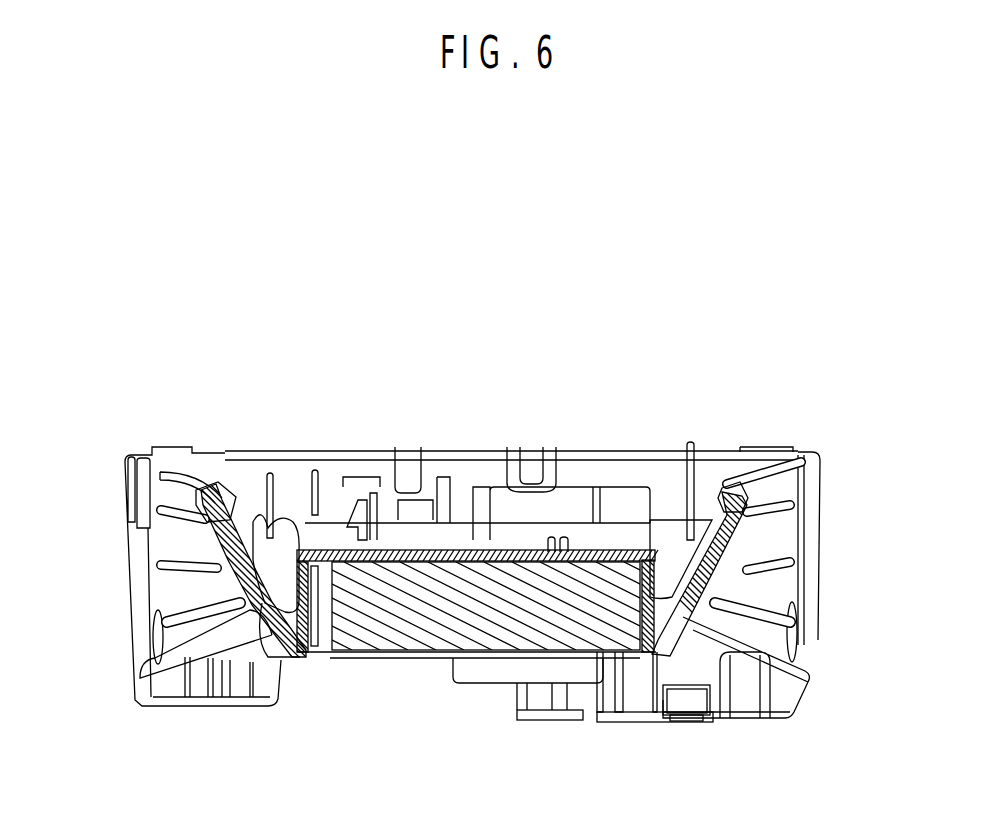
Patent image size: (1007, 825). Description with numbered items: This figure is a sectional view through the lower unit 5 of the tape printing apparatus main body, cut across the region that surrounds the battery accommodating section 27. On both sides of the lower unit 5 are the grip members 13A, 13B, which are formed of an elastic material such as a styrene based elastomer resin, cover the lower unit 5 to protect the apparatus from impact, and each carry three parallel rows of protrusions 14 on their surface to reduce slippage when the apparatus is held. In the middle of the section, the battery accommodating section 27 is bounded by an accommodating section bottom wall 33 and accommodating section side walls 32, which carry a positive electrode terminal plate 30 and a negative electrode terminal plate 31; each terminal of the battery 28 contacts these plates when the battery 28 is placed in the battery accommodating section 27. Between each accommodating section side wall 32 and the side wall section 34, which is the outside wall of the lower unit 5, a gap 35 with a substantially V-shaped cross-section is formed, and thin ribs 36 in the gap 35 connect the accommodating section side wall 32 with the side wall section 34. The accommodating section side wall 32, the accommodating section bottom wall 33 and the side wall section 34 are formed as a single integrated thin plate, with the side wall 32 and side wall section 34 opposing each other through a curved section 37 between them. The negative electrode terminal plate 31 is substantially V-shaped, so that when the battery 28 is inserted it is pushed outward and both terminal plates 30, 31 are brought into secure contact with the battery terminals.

The lower unit 5 is at (780, 412).
The grip member 13A is at (805, 640).
The grip member 13B is at (176, 641).
The protrusions 14 is at (170, 620).
The battery accommodating section 27 is at (568, 548).
The battery 28 is at (425, 625).
The positive electrode terminal plate 30 is at (648, 598).
The negative electrode terminal plate 31 is at (310, 645).
The accommodating section side wall 32 is at (304, 545).
The accommodating section bottom wall 33 is at (460, 548).
The side wall section 34 is at (243, 518).
The gap 35 is at (267, 558).
The thin ribs 36 is at (288, 523).
The curved section 37 is at (292, 640).